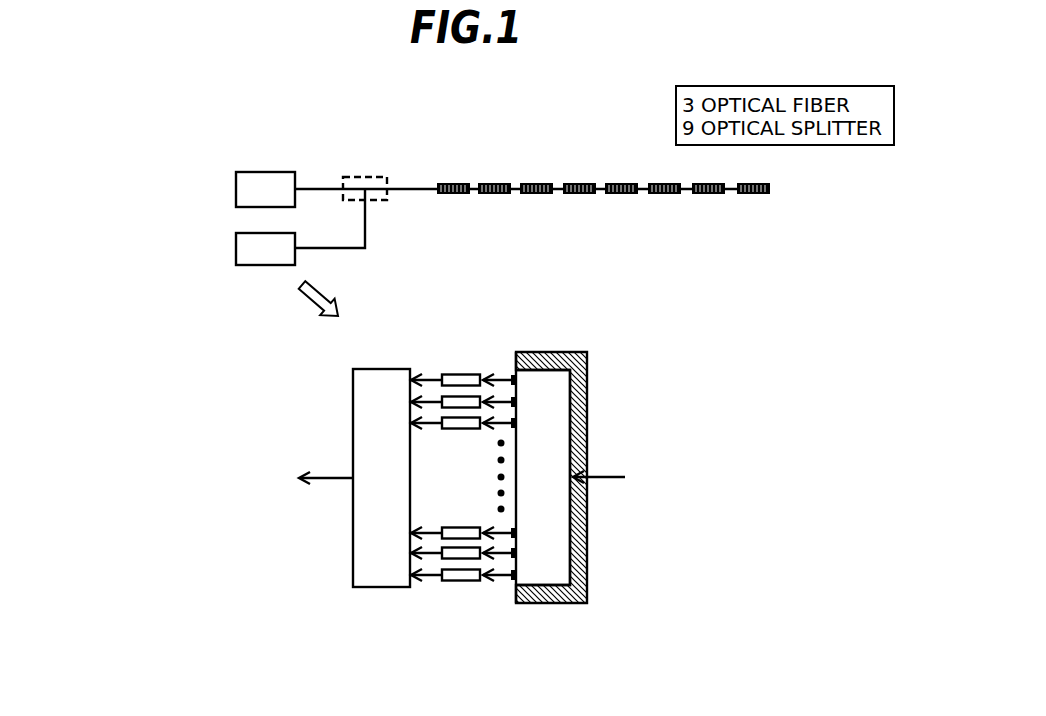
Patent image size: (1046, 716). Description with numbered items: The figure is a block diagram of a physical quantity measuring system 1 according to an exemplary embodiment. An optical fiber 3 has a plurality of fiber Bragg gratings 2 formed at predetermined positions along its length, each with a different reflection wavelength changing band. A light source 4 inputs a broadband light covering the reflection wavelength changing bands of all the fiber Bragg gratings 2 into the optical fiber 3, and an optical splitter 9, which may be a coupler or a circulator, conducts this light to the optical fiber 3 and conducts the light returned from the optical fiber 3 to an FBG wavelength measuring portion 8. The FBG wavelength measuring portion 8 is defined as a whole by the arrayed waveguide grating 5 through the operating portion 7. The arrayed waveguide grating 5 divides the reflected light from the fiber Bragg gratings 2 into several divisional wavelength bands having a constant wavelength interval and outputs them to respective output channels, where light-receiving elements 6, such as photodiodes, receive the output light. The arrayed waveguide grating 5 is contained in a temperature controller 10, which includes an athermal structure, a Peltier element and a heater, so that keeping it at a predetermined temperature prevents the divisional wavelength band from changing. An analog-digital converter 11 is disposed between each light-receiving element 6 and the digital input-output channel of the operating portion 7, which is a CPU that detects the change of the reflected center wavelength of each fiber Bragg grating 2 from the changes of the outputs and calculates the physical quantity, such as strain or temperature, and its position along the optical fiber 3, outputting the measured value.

The physical quantity measuring system 1 is at (258, 98).
The fiber Bragg grating 2 is at (537, 183).
The optical fiber 3 is at (412, 189).
The light source 4 is at (258, 172).
The arrayed waveguide grating 5 is at (567, 388).
The light-receiving element 6 is at (508, 375).
The operating portion 7 is at (353, 409).
The FBG wavelength measuring portion 8 is at (265, 265).
The optical splitter 9 is at (353, 177).
The temperature controller 10 is at (587, 353).
The analog-digital converter 11 is at (447, 372).